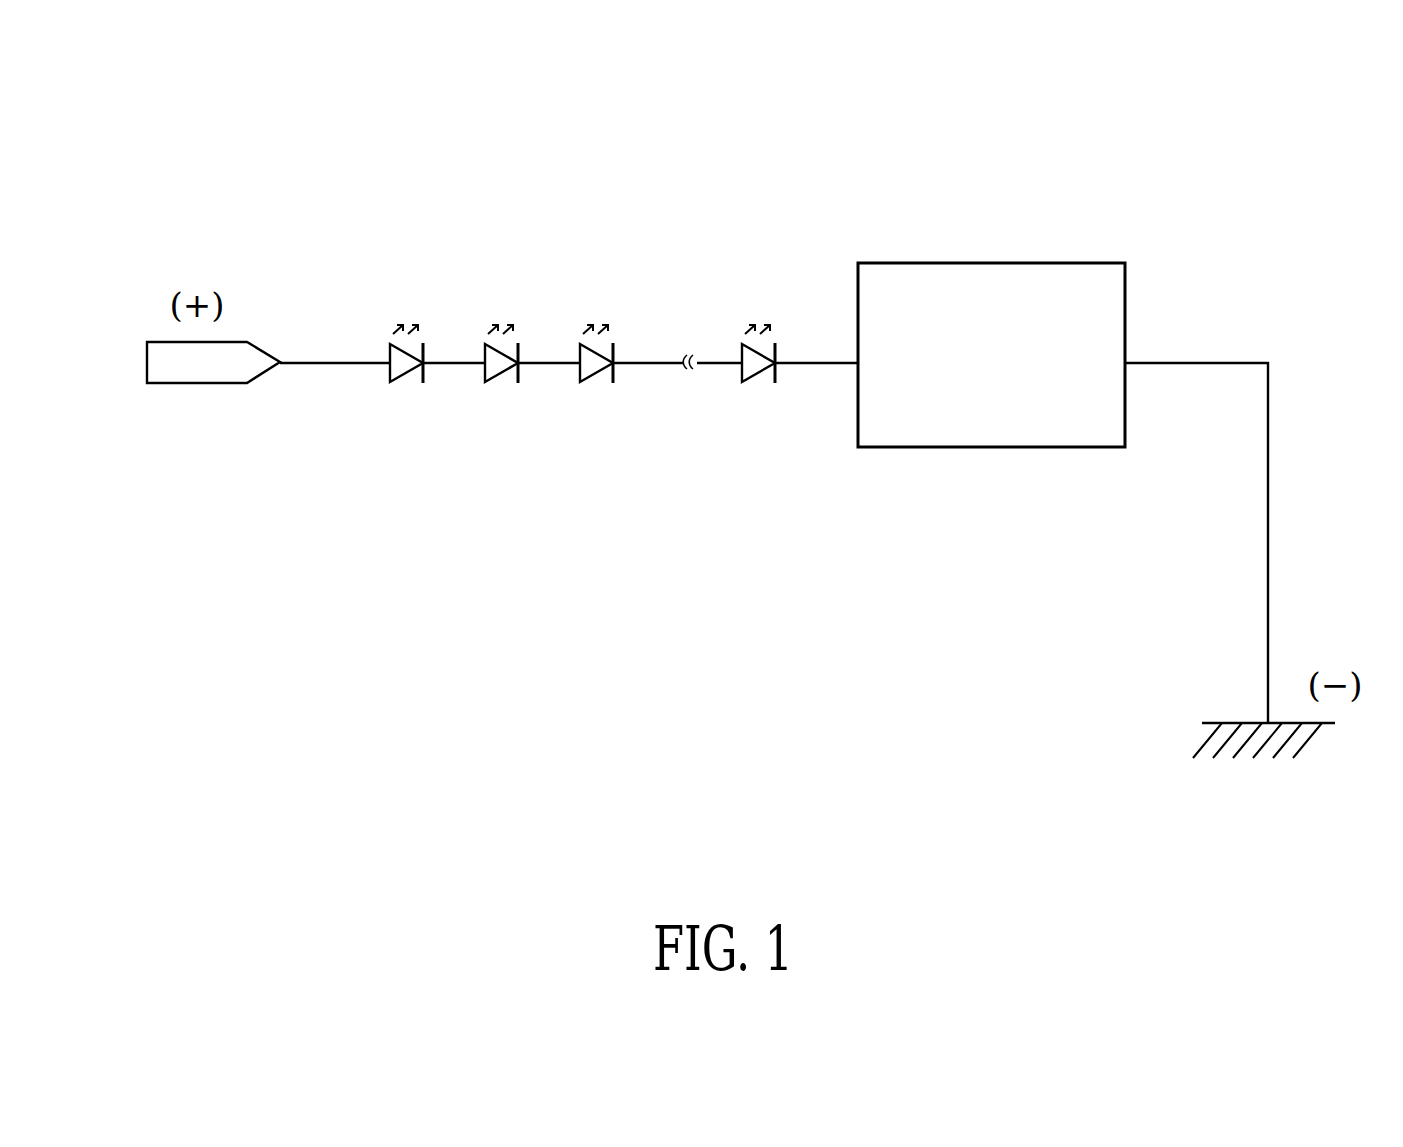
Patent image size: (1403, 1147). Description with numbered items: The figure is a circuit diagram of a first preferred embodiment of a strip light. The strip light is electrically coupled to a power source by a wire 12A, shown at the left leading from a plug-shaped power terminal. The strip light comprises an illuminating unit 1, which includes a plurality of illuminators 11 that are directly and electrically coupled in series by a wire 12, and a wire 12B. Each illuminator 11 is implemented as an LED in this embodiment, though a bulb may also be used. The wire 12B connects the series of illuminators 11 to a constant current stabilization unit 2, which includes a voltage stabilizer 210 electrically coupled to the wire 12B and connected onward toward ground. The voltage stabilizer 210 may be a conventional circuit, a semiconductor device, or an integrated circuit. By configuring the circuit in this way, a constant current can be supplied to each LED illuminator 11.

The illuminating unit 1 is at (582, 364).
The illuminator 11 is at (485, 382).
The wire 12 is at (550, 383).
The wire 12A is at (332, 363).
The wire 12B is at (821, 363).
The constant current stabilization unit 2 is at (1034, 262).
The voltage stabilizer 210 is at (979, 285).